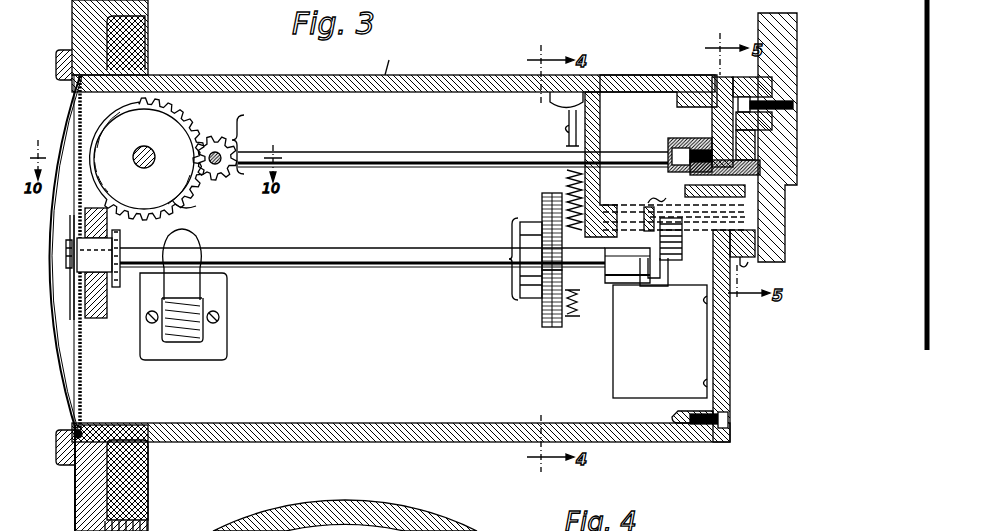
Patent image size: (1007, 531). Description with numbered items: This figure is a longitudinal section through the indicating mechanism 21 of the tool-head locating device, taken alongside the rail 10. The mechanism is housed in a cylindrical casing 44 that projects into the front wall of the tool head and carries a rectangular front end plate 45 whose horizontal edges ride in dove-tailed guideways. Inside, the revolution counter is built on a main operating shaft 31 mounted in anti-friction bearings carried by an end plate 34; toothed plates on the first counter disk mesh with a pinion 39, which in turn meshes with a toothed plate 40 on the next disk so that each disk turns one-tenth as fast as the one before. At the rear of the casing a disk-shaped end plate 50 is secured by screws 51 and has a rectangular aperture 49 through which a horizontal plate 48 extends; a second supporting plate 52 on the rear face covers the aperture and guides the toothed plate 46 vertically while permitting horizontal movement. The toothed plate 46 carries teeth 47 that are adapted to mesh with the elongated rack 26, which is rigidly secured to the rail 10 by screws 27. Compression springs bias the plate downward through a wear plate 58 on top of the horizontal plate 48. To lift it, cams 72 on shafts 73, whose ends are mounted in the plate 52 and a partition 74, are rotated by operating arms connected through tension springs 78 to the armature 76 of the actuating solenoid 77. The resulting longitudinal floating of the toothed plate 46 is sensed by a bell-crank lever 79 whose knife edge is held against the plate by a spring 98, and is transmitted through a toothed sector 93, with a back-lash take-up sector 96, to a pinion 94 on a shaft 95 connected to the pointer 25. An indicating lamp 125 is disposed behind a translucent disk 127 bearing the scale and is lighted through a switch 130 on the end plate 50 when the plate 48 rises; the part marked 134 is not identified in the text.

The rail 10 is at (760, 16).
The cylindrical casing 44 is at (389, 60).
The rectangular front end plate 45 is at (75, 474).
The translucent disk 127 is at (84, 353).
The bracket 134 is at (68, 230).
The pointer 25 is at (72, 240).
The indicating lamp 125 is at (200, 240).
The shaft 95 is at (422, 250).
The end plate 34 is at (240, 138).
The indicating mechanism 21 is at (165, 158).
The main operating shaft 31 is at (144, 159).
The pinion 39 is at (220, 172).
The toothed plate 40 is at (190, 205).
The partition 74 is at (600, 141).
The spring 98 is at (566, 180).
The pinion 94 is at (535, 246).
The sector 96 is at (545, 312).
The toothed sector 93 is at (569, 318).
The shaft 73 is at (627, 265).
The armature 76 is at (644, 284).
The tension spring 78 is at (678, 240).
The bell-crank lever 79 is at (674, 215).
The horizontal plate 48 is at (658, 195).
The switch 130 is at (670, 140).
The screw 27 is at (770, 122).
The elongated rack 26 is at (740, 78).
The teeth 47 is at (760, 147).
The toothed plate 46 is at (746, 163).
The wear plate 58 is at (760, 172).
The cam 72 is at (745, 203).
The end plate 50 is at (716, 341).
The rectangular aperture 49 is at (756, 242).
The supporting plate 52 is at (748, 266).
The actuating solenoid 77 is at (613, 328).
The screw 51 is at (730, 420).